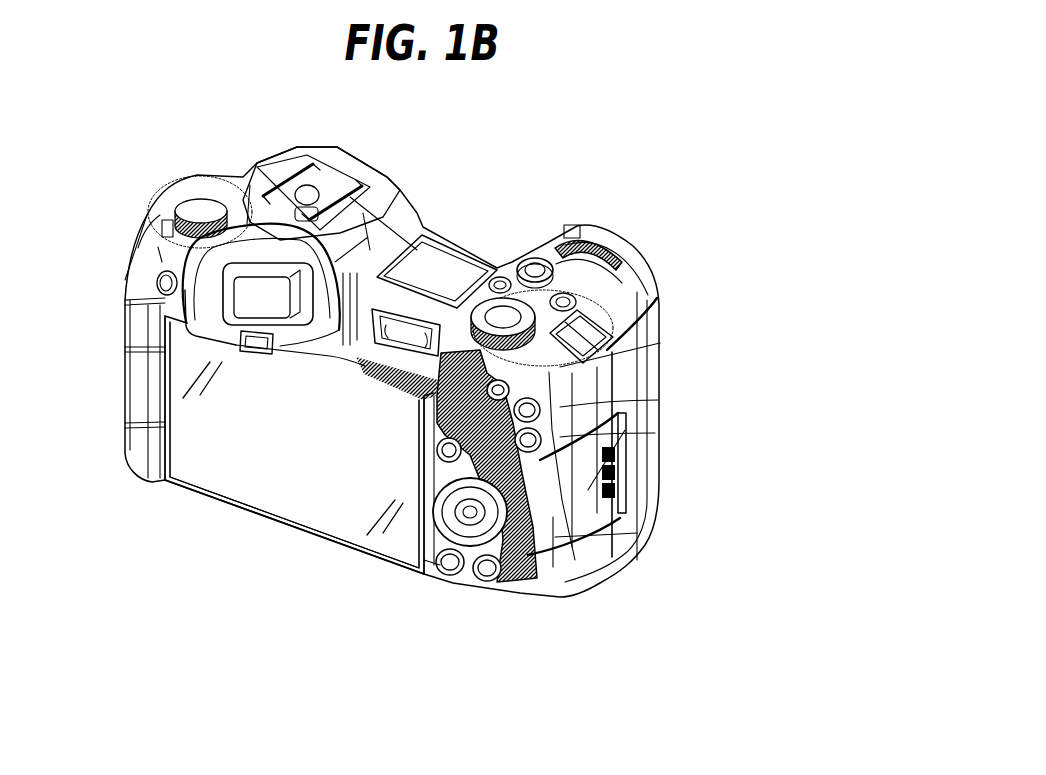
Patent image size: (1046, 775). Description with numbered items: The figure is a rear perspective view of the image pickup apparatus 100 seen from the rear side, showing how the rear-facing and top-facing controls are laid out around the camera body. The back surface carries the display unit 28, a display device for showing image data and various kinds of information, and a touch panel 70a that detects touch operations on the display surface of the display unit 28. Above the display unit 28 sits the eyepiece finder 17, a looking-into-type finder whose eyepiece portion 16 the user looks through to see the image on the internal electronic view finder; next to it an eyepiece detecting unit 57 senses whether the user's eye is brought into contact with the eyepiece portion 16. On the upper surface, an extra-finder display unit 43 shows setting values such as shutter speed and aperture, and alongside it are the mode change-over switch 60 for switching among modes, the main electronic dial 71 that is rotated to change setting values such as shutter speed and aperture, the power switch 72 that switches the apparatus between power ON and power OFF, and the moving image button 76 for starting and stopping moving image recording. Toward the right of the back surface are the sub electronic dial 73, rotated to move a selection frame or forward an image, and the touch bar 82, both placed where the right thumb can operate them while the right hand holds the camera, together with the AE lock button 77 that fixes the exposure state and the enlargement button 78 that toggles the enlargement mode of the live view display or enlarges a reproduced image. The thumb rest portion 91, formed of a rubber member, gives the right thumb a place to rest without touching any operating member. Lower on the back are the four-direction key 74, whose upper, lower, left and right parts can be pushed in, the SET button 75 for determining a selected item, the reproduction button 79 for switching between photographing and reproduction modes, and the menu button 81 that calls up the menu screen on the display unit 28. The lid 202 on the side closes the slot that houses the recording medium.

The image pickup apparatus 100 is at (616, 164).
The eyepiece portion 16 is at (243, 288).
The eyepiece finder 17 is at (312, 282).
The display unit 28 is at (275, 490).
The touch panel 70a is at (275, 490).
The extra-finder display unit 43 is at (444, 252).
The eyepiece detecting unit 57 is at (240, 351).
The mode change-over switch 60 is at (500, 317).
The main electronic dial 71 is at (590, 246).
The power switch 72 is at (200, 210).
The sub electronic dial 73 is at (577, 303).
The four-direction key 74 is at (513, 584).
The SET button 75 is at (430, 558).
The moving image button 76 is at (534, 266).
The AE lock button 77 is at (541, 411).
The enlargement button 78 is at (542, 441).
The reproduction button 79 is at (447, 578).
The menu button 81 is at (163, 283).
The touch bar 82 is at (402, 326).
The thumb rest portion 91 is at (510, 391).
The lid 202 is at (604, 485).